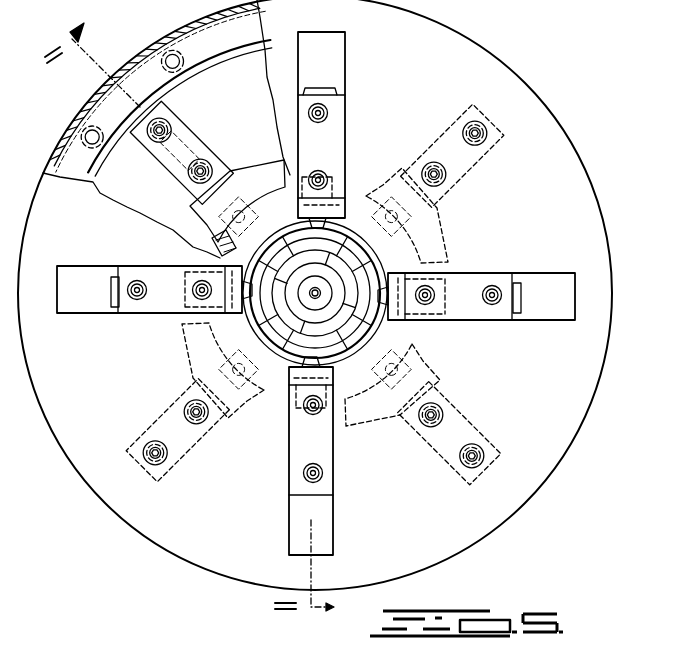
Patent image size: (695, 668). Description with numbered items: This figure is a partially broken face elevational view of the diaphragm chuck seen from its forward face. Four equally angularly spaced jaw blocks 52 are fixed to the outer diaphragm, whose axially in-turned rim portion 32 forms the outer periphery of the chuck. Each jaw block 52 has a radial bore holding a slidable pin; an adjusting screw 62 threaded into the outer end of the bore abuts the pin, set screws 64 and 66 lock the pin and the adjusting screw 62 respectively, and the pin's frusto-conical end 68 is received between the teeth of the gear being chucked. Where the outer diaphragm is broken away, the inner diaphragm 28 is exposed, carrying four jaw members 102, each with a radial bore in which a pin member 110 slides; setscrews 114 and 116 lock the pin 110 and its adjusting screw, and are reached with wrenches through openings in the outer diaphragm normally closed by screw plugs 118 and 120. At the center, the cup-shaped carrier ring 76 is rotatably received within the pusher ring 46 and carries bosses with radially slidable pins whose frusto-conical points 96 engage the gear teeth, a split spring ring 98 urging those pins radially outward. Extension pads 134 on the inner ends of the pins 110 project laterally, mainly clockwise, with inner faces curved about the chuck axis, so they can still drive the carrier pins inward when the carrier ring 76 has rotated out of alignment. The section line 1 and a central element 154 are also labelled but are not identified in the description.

The section line 1- 1 is at (195, 313).
The inner diaphragm 28 is at (166, 129).
The axially in-turned rim portion 32 is at (603, 357).
The pusher ring 46 is at (212, 245).
The jaw block member 52 is at (346, 120).
The adjusting screw 62 is at (335, 87).
The set screw 64 is at (328, 178).
The set screw 66 is at (328, 111).
The frusto-conical end 68 is at (315, 293).
The carrier ring 76 is at (382, 270).
The frusto-conical point 96 is at (347, 258).
The split spring ring 98 is at (270, 160).
The jaw member 102 is at (169, 105).
The pin member 110 is at (172, 183).
The setscrew 114 is at (186, 167).
The setscrew 116 is at (156, 140).
The screw plug 118 is at (441, 413).
The screw plug 120 is at (478, 454).
The extension pad 134 is at (240, 165).
The hub outer ring 154 is at (315, 293).